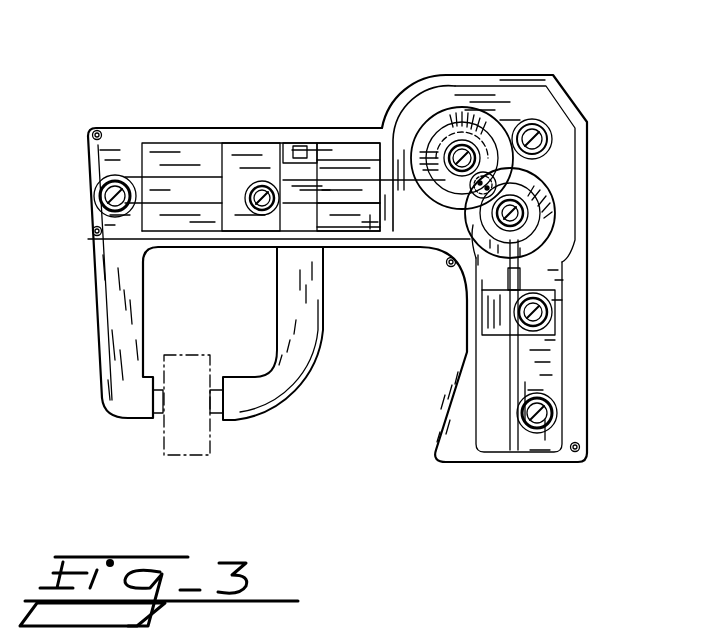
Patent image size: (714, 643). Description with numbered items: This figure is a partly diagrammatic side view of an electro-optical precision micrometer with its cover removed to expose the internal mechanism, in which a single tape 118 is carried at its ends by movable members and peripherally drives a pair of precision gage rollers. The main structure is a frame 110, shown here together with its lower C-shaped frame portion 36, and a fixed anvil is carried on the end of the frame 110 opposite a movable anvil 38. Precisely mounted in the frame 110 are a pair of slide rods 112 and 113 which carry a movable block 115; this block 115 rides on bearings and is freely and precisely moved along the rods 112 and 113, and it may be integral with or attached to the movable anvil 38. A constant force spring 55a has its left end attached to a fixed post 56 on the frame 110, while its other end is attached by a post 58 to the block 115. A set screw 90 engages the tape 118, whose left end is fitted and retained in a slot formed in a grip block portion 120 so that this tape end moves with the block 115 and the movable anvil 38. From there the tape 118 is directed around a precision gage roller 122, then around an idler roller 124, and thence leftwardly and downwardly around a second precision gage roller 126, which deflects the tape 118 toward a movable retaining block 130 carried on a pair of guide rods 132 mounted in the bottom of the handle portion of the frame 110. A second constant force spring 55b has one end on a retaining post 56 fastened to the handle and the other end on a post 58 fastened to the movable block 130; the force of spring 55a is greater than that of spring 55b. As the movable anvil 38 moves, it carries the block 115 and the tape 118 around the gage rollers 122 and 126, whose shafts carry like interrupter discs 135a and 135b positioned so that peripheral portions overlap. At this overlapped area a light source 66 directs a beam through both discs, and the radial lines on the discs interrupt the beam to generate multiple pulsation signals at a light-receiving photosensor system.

The frame 36 is at (107, 325).
The movable anvil 38 is at (298, 373).
The constant force spring 55a is at (158, 178).
The constant force spring 55b is at (517, 386).
The fixed post 56 is at (100, 193).
The post 58 is at (260, 180).
The light source 66 is at (472, 190).
The set screw 90 is at (308, 125).
The frame 110 is at (553, 80).
The slide rod 112 is at (370, 220).
The slide rod 113 is at (338, 157).
The movable block 115 is at (237, 150).
The tape 118 is at (388, 150).
The grip block portion 120 is at (300, 187).
The precision gage roller 122 is at (490, 97).
The idler roller 124 is at (548, 131).
The precision gage roller 126 is at (528, 213).
The movable retaining block 130 is at (555, 292).
The guide rod 132 is at (486, 364).
The interrupter disc 135a is at (445, 118).
The interrupter disc 135b is at (544, 185).